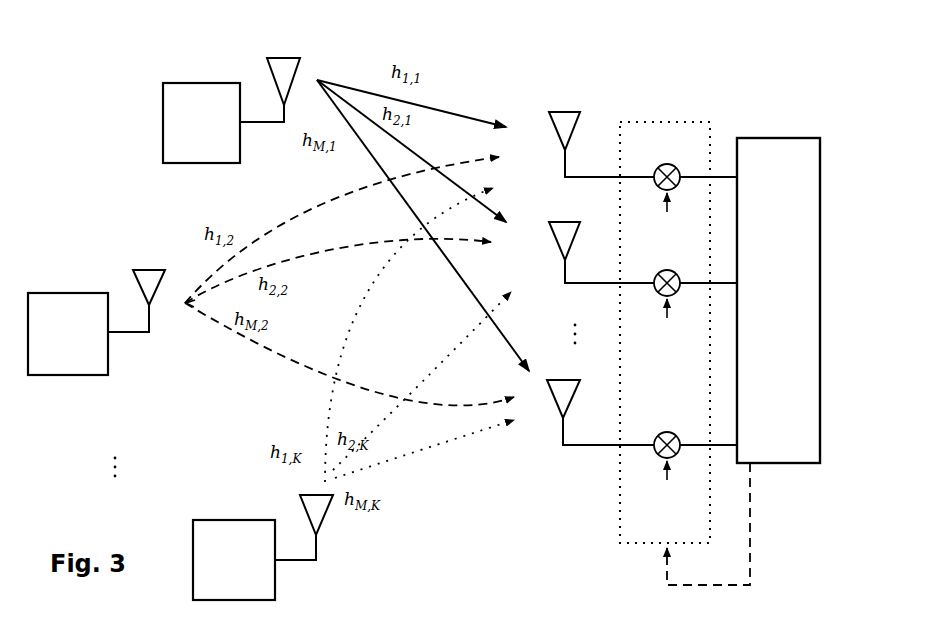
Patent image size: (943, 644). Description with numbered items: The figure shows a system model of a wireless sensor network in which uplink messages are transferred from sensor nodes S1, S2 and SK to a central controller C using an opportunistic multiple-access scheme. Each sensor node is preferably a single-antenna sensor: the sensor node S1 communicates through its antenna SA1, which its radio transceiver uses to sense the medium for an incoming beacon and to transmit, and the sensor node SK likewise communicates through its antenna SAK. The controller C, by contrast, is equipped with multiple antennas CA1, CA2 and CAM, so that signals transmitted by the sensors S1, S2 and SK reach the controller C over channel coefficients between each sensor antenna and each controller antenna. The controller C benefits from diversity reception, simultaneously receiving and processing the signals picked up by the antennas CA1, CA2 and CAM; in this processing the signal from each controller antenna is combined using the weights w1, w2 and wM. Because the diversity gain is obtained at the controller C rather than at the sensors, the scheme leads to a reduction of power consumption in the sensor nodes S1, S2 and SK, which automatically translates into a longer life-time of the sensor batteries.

The sensor node S1 is at (215, 91).
The sensor node S2 is at (76, 300).
The sensor node SK is at (238, 524).
The antenna SA1 is at (284, 63).
The antenna SAK is at (322, 512).
The controller antenna CA1 is at (565, 118).
The controller antenna CA2 is at (574, 240).
The controller antenna CAM is at (558, 424).
The weight w1 is at (695, 205).
The weight w2 is at (695, 317).
The weight wM is at (695, 477).
The central controller C is at (760, 150).